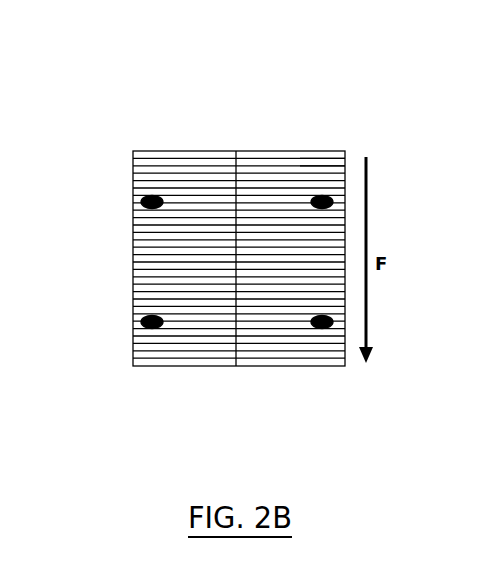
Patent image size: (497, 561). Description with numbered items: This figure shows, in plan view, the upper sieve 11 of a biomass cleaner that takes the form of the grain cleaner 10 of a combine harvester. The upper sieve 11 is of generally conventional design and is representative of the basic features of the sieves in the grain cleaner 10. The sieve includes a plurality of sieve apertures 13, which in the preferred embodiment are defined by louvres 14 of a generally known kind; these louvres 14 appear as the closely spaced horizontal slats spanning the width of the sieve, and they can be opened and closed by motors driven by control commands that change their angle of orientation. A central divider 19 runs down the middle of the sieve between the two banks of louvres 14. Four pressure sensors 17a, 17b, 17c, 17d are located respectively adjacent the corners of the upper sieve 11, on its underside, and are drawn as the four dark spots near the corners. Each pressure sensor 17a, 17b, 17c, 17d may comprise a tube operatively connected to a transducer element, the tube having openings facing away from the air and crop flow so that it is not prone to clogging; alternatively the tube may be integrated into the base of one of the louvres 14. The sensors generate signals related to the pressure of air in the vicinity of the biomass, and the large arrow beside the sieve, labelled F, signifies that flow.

The grain cleaner 10 is at (358, 92).
The upper sieve 11 is at (322, 366).
The sieve apertures 13 is at (313, 160).
The louvres 14 is at (162, 343).
The central divider 19 is at (264, 156).
The pressure sensor 17a is at (143, 198).
The pressure sensor 17b is at (322, 196).
The pressure sensor 17c is at (330, 328).
The pressure sensor 17d is at (147, 330).